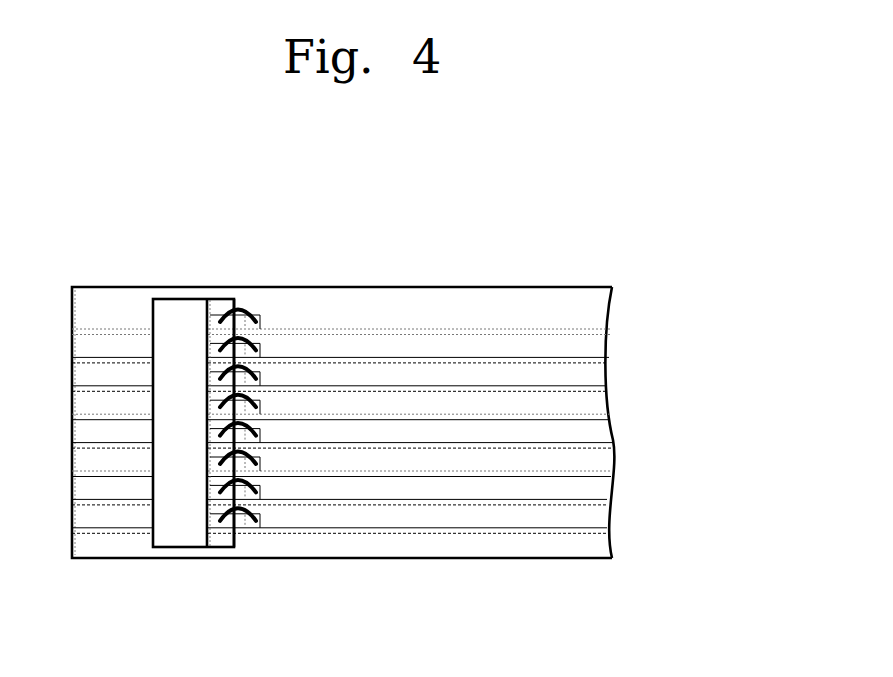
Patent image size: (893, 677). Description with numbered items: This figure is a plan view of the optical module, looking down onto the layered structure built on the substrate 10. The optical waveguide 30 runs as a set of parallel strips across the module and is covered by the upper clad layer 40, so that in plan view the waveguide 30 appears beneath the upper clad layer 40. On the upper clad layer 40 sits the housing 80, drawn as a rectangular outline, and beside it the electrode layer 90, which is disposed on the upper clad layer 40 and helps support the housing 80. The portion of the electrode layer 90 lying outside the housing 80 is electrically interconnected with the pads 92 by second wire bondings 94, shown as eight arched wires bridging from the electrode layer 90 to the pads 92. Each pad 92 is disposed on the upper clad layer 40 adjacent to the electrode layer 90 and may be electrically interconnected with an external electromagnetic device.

The substrate 10 is at (461, 559).
The optical waveguide 30 is at (516, 332).
The upper clad layer 40 is at (410, 325).
The housing 80 is at (184, 308).
The electrode layer 90 is at (220, 325).
The pad 92 is at (260, 312).
The second wire bonding 94 is at (257, 317).